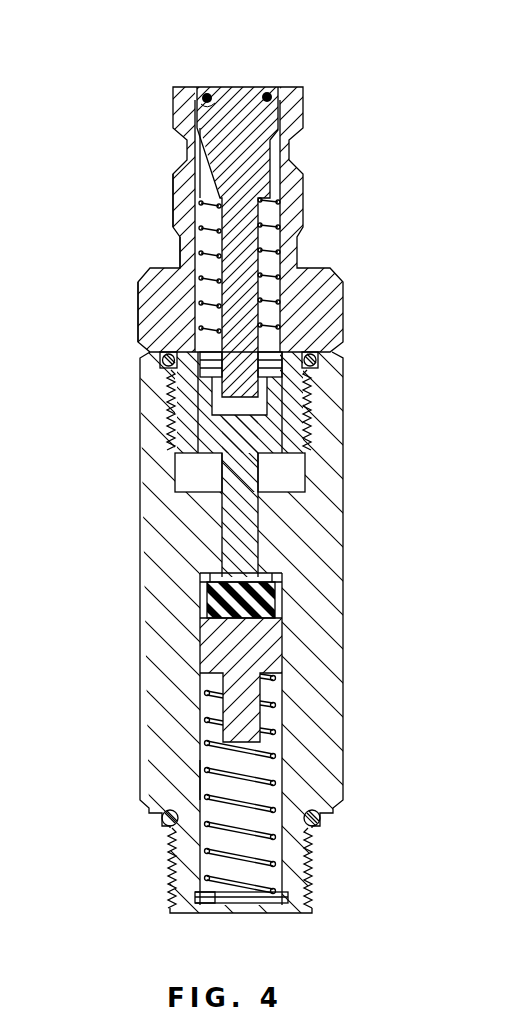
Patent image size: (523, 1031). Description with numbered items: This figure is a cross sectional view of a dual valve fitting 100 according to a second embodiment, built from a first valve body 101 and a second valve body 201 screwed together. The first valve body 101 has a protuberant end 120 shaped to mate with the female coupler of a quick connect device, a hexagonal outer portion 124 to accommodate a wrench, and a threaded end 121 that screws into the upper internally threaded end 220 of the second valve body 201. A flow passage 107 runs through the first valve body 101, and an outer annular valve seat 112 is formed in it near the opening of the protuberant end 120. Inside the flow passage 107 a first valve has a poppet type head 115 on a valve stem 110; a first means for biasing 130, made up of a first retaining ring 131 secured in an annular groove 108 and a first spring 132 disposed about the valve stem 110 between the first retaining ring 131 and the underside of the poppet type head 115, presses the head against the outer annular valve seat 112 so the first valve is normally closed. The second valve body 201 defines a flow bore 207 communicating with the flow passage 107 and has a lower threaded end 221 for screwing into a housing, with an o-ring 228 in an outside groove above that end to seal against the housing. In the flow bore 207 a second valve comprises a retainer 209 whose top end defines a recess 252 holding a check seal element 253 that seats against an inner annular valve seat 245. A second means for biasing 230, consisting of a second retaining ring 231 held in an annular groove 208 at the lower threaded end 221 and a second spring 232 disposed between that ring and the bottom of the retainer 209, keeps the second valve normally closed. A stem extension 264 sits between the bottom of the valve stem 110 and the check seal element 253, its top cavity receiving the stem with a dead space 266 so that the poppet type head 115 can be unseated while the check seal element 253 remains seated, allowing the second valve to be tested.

The dual valve fitting 100 is at (156, 101).
The first valve body 101 is at (305, 98).
The flow passage 107 is at (270, 184).
The annular groove 108 is at (264, 372).
The valve stem 110 is at (255, 144).
The outer annular valve seat 112 is at (223, 87).
The poppet type head 115 is at (247, 87).
The protuberant end 120 is at (173, 182).
The threaded end 121 is at (168, 408).
The hexagonal outer portion 124 is at (143, 313).
The first means for biasing 130 is at (189, 259).
The first retaining ring 131 is at (320, 370).
The first spring 132 is at (280, 223).
The second valve body 201 is at (140, 383).
The flow bore 207 is at (290, 475).
The annular groove 208 is at (272, 915).
The retainer 209 is at (258, 640).
The upper internally threaded end 220 is at (140, 498).
The lower threaded end 221 is at (168, 852).
The o-ring 228 is at (318, 822).
The second means for biasing 230 is at (264, 873).
The second retaining ring 231 is at (200, 896).
The second spring 232 is at (215, 784).
The inner annular valve seat 245 is at (262, 575).
The recess 252 is at (280, 603).
The check seal element 253 is at (205, 613).
The stem extension 264 is at (245, 510).
The dead space 266 is at (200, 425).